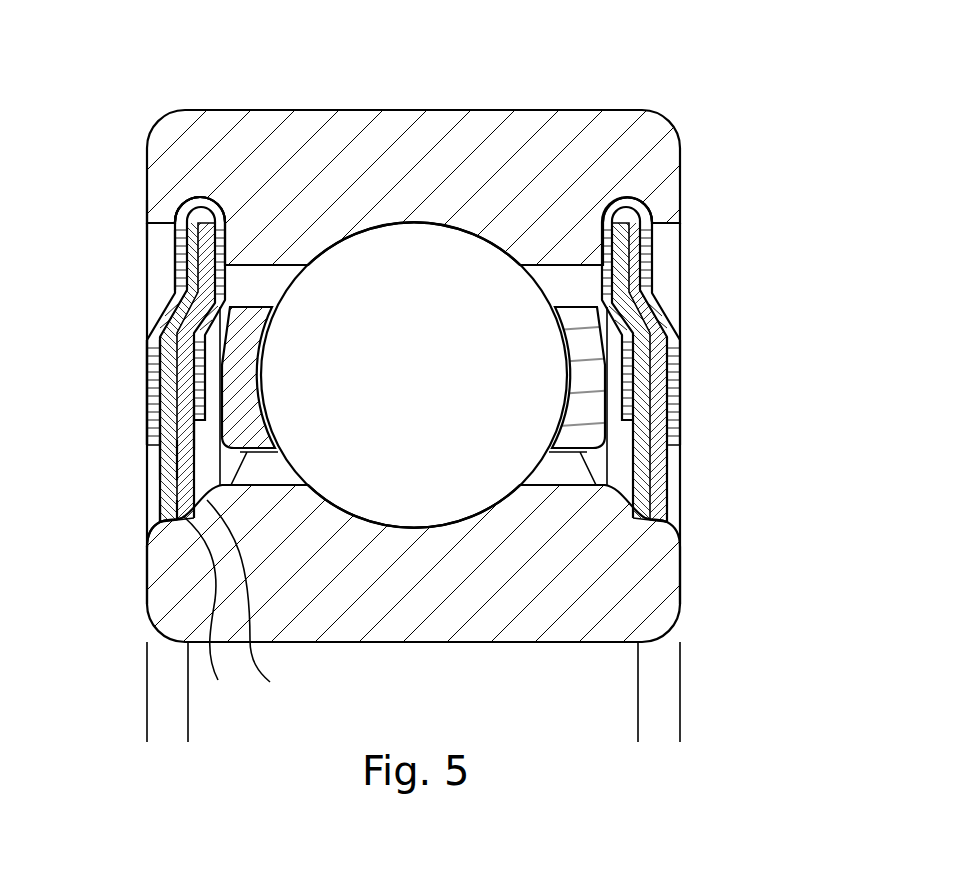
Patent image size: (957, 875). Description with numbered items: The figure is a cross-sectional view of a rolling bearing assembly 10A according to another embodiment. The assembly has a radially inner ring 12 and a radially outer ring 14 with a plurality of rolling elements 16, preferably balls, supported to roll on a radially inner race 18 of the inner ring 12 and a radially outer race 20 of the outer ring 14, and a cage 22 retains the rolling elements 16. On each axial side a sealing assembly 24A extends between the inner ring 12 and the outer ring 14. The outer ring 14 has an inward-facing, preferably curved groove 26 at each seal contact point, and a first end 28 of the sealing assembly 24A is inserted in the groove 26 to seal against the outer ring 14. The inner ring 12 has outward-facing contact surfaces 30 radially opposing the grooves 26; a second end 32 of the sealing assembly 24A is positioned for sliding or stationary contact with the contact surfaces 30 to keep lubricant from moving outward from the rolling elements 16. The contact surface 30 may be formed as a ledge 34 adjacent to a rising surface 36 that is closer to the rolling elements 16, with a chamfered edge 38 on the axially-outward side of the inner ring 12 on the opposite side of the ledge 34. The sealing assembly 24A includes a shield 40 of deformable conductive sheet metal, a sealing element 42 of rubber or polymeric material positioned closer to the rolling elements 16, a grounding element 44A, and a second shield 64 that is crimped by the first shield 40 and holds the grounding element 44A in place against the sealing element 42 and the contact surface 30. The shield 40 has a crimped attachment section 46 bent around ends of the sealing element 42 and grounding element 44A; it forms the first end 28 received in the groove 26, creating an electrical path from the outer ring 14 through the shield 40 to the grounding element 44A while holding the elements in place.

The rolling bearing assembly 10A is at (416, 378).
The radially inner ring 12 is at (540, 627).
The radially outer ring 14 is at (563, 147).
The rolling elements 16 is at (434, 404).
The radially inner race 18 is at (428, 518).
The radially outer race 20 is at (445, 225).
The cage 22 is at (583, 367).
The sealing assembly 24A is at (416, 361).
The groove 26 is at (197, 197).
The first end 28 is at (175, 241).
The contact surfaces 30 is at (160, 523).
The second end 32 is at (139, 512).
The ledge 34 is at (218, 680).
The rising surface 36 is at (270, 682).
The chamfered edge 38 is at (146, 549).
The shield 40 is at (176, 206).
The sealing element 42 is at (188, 430).
The grounding element 44A is at (172, 460).
The attachment section 46 is at (146, 216).
The second shield 64 is at (155, 360).